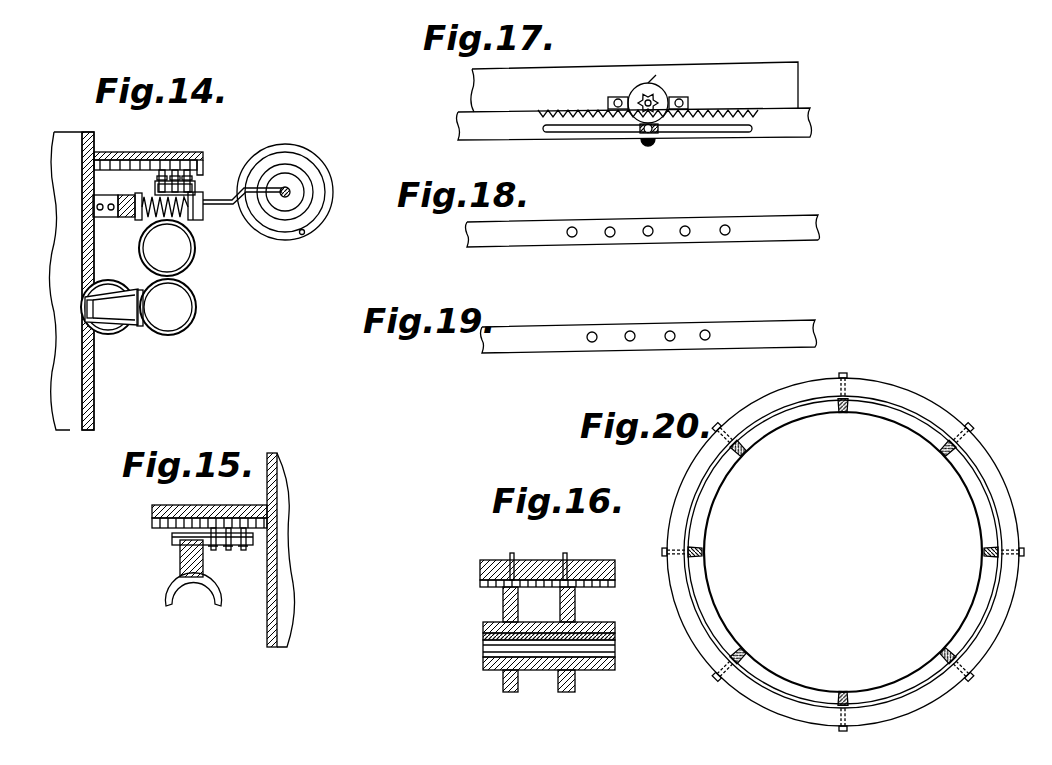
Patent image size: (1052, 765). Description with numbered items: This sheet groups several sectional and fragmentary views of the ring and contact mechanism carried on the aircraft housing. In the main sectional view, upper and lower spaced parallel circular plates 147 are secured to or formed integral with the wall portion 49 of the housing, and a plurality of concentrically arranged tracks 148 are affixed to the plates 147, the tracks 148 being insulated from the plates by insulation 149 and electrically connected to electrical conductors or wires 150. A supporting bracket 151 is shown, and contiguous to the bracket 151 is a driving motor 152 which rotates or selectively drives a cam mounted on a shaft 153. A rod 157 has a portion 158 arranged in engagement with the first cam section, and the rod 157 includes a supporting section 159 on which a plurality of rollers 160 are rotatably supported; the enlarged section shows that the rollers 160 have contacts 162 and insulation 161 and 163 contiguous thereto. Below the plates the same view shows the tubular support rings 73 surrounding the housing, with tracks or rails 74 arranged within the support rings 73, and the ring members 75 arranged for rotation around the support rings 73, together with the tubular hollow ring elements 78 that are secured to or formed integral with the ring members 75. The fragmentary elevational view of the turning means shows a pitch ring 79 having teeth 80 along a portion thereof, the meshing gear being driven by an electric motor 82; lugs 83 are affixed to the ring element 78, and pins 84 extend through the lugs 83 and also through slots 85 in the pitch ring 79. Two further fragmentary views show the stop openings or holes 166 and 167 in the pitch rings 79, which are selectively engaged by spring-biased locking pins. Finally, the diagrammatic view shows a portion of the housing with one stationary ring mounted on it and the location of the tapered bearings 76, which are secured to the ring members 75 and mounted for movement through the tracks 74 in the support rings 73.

In FIG. 14, the wall portion 49 is at (94, 416).
In FIG. 15, the wall portion 49 is at (280, 598).
In FIG. 14, the support rings 73 is at (126, 336).
In FIG. 14, the tracks or rails 74 is at (82, 318).
In FIG. 14, the ring members 75 is at (180, 336).
In FIG. 20, the tapered bearings 76 is at (749, 425).
In FIG. 14, the tubular hollow ring elements 78 is at (194, 266).
In FIG. 15, the tubular hollow ring elements 78 is at (167, 590).
In FIG. 14, the pitch rings 79 is at (122, 218).
In FIG. 17, the pitch rings 79 is at (522, 134).
In FIG. 18, the pitch rings 79 is at (540, 231).
In FIG. 19, the pitch rings 79 is at (540, 343).
In FIG. 17, the teeth 80 is at (580, 97).
In FIG. 17, the electric motor 82 is at (646, 84).
In FIG. 17, the lugs 83 is at (648, 147).
In FIG. 17, the pins 84 is at (645, 133).
In FIG. 17, the slots 85 is at (598, 132).
In FIG. 14, the circular plates 147 is at (107, 158).
In FIG. 15, the circular plates 147 is at (206, 505).
In FIG. 16, the circular plates 147 is at (482, 570).
In FIG. 14, the tracks 148 is at (141, 172).
In FIG. 15, the tracks 148 is at (240, 516).
In FIG. 16, the tracks 148 is at (550, 590).
In FIG. 14, the insulation 149 is at (198, 158).
In FIG. 15, the insulation 149 is at (153, 510).
In FIG. 16, the insulation 149 is at (614, 570).
In FIG. 16, the electrical conductors or wires 150 is at (510, 552).
In FIG. 14, the supporting bracket 151 is at (203, 216).
In FIG. 14, the driving motor 152 is at (302, 240).
In FIG. 14, the shaft 153 is at (289, 195).
In FIG. 14, the rod 157 is at (234, 183).
In FIG. 14, the portion 158 is at (258, 226).
In FIG. 14, the supporting section 159 is at (161, 162).
In FIG. 15, the supporting section 159 is at (172, 542).
In FIG. 16, the supporting section 159 is at (483, 648).
In FIG. 15, the rollers 160 is at (232, 552).
In FIG. 16, the rollers 160 is at (503, 606).
In FIG. 16, the insulation 161 is at (483, 660).
In FIG. 16, the contacts 162 is at (528, 672).
In FIG. 16, the insulation 163 is at (606, 624).
In FIG. 18, the holes 166 is at (612, 228).
In FIG. 19, the holes 167 is at (633, 332).